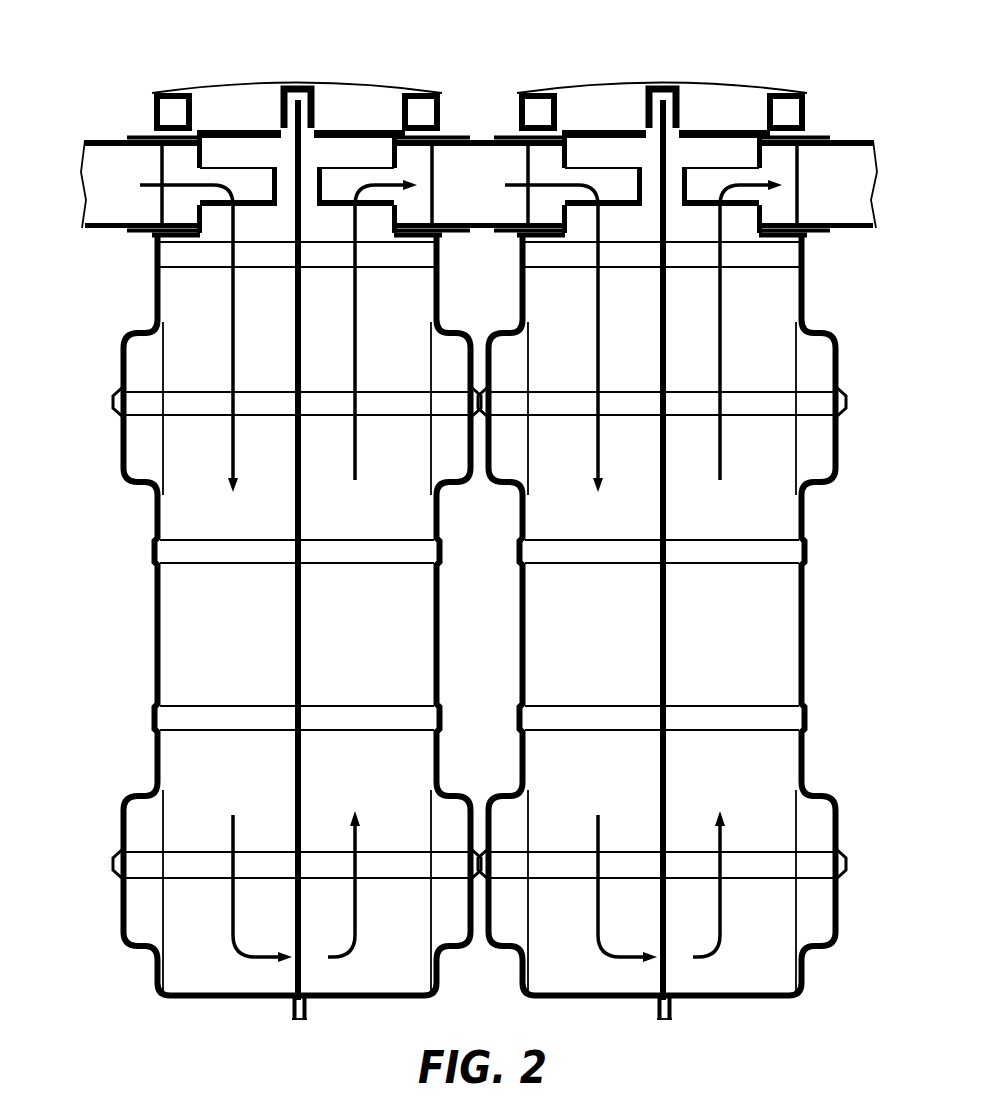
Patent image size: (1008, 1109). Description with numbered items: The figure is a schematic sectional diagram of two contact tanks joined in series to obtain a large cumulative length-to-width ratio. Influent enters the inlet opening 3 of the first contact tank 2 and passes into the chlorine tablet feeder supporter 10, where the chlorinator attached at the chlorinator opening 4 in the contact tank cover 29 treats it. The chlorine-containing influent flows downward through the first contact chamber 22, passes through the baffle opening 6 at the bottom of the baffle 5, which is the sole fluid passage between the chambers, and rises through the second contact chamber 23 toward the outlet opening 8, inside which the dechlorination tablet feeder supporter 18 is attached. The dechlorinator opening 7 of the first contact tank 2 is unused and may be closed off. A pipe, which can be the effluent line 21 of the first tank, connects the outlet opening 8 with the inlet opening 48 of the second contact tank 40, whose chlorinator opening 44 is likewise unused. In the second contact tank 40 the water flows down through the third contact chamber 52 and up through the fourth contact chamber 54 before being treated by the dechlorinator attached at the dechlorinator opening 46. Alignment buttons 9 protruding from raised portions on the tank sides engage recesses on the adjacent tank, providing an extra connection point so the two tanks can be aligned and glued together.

The contact tank 2 is at (157, 632).
The inlet opening 3 is at (180, 237).
The chlorinator opening 4 is at (243, 103).
The baffle 5 is at (303, 806).
The baffle opening 6 is at (303, 960).
The dechlorinator opening 7 is at (347, 128).
The outlet opening 8 is at (413, 93).
The alignment buttons 9 is at (483, 865).
The chlorine tablet feeder supporter 10 is at (102, 188).
The dechlorination tablet feeder supporter 18 is at (410, 162).
The effluent line 21 is at (480, 175).
The first contact chamber 22 is at (213, 659).
The second contact chamber 23 is at (356, 659).
The contact tank cover 29 is at (263, 84).
The second contact tank 40 is at (676, 615).
The chlorinator opening 44 is at (662, 72).
The dechlorinator opening 46 is at (691, 513).
The inlet opening 48 is at (538, 79).
The third contact chamber 52 is at (593, 634).
The fourth contact chamber 54 is at (730, 634).